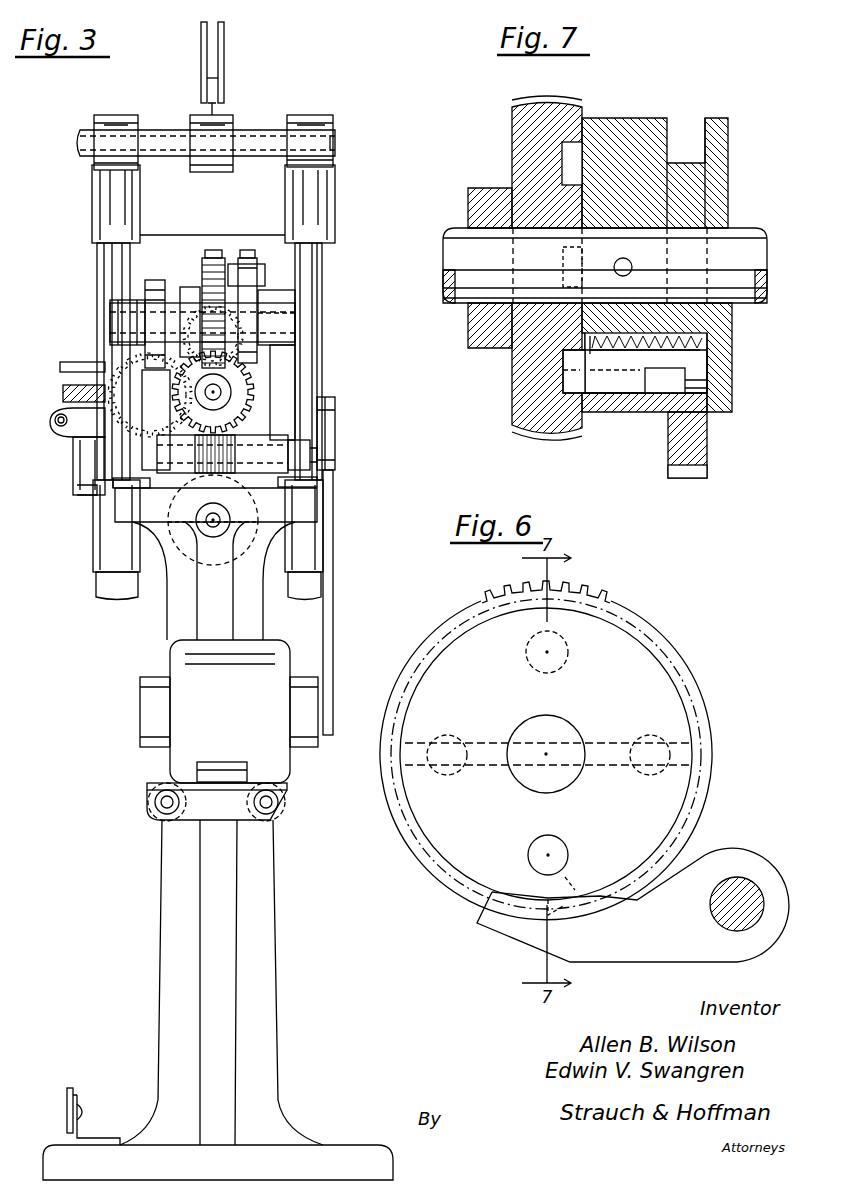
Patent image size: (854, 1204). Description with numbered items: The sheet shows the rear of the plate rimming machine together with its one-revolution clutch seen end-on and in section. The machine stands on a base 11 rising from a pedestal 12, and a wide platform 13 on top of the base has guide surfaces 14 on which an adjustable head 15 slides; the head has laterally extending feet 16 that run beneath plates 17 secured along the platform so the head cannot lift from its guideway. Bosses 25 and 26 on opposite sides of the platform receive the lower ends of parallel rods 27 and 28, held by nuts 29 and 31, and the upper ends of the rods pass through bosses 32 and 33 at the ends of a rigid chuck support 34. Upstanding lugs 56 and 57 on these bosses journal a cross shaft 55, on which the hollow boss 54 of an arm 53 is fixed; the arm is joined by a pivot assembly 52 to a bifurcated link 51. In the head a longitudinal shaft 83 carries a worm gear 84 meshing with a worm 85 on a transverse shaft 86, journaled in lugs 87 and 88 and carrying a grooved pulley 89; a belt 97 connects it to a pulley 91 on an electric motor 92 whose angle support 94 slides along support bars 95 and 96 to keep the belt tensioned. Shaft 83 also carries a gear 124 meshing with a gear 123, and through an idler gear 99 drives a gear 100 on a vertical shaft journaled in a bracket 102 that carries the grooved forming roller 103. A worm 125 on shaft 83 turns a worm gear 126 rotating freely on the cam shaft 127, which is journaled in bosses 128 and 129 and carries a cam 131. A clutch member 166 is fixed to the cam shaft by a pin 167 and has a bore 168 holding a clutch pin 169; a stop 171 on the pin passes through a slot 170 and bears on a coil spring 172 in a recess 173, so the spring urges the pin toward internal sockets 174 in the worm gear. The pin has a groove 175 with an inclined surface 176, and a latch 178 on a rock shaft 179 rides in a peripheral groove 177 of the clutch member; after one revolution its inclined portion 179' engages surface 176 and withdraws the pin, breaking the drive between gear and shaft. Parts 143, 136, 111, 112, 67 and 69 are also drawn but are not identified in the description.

In FIG. 3, the bifurcated link 51 is at (225, 55).
In FIG. 3, the pivot assembly 52 is at (226, 90).
In FIG. 3, the arm 53 is at (216, 110).
In FIG. 3, the hollow boss 54 is at (233, 124).
In FIG. 3, the cross shaft 55 is at (272, 133).
In FIG. 3, the upstanding lug 56 is at (120, 120).
In FIG. 3, the upstanding lug 57 is at (315, 120).
In FIG. 3, the boss 32 is at (95, 211).
In FIG. 3, the boss 33 is at (330, 192).
In FIG. 3, the chuck support 34 is at (162, 228).
In FIG. 3, the rod 27 is at (100, 273).
In FIG. 3, the rod 28 is at (322, 265).
In FIG. 3, the cam shaft 127 is at (296, 325).
In FIG. 7, the cam shaft 127 is at (745, 228).
In FIG. 6, the cam shaft 127 is at (540, 791).
In FIG. 3, the boss 128 is at (110, 306).
In FIG. 3, the boss 129 is at (293, 300).
In FIG. 3, the collar 143 is at (155, 282).
In FIG. 3, the worm gear 126 is at (202, 278).
In FIG. 7, the worm gear 126 is at (550, 70).
In FIG. 6, the worm gear 126 is at (580, 592).
In FIG. 3, the collar 136 is at (248, 258).
In FIG. 3, the cam 131 is at (254, 296).
In FIG. 3, the gear 123 is at (276, 317).
In FIG. 3, the shaft 83 is at (215, 392).
In FIG. 3, the worm gear 84 is at (240, 410).
In FIG. 3, the gear 124 is at (170, 413).
In FIG. 3, the worm 125 is at (190, 428).
In FIG. 3, the idler gear 99 is at (122, 420).
In FIG. 3, the adjustable head 15 is at (272, 390).
In FIG. 3, the lug 88 is at (280, 440).
In FIG. 3, the worm 85 is at (235, 436).
In FIG. 3, the transverse shaft 86 is at (302, 440).
In FIG. 3, the grooved pulley 89 is at (335, 410).
In FIG. 3, the belt 97 is at (333, 620).
In FIG. 3, the grooved forming roller 103 is at (80, 362).
In FIG. 3, the gear 100 is at (63, 396).
In FIG. 3, the arm 111 is at (50, 422).
In FIG. 3, the pivot 112 is at (67, 421).
In FIG. 3, the bracket 102 is at (75, 449).
In FIG. 3, the plate 17 is at (119, 462).
In FIG. 3, the lug 87 is at (160, 476).
In FIG. 3, the feet 16 is at (292, 484).
In FIG. 3, the platform 13 is at (305, 495).
In FIG. 3, the guide surfaces 14 is at (262, 515).
In FIG. 3, the boss 25 is at (95, 557).
In FIG. 3, the nut 29 is at (100, 592).
In FIG. 3, the boss 26 is at (285, 568).
In FIG. 3, the nut 31 is at (318, 578).
In FIG. 3, the base 11 is at (258, 903).
In FIG. 3, the electric motor 92 is at (278, 650).
In FIG. 3, the grooved pulley 91 is at (333, 688).
In FIG. 3, the angle support 94 is at (216, 810).
In FIG. 3, the support bar 95 is at (155, 810).
In FIG. 3, the support bar 96 is at (278, 803).
In FIG. 3, the pedestal 12 is at (337, 1145).
In FIG. 3, the plate 67 is at (74, 1092).
In FIG. 3, the bracket 69 is at (82, 1108).
In FIG. 7, the clutch member 166 is at (638, 118).
In FIG. 7, the peripheral groove 177 is at (682, 160).
In FIG. 7, the internal sockets 174 is at (576, 150).
In FIG. 6, the internal sockets 174 is at (568, 640).
In FIG. 7, the pin 167 is at (623, 258).
In FIG. 6, the pin 167 is at (613, 763).
In FIG. 7, the stop 171 is at (598, 318).
In FIG. 7, the recess 173 is at (632, 318).
In FIG. 7, the coil spring 172 is at (700, 330).
In FIG. 7, the bore 168 is at (704, 346).
In FIG. 7, the slot 170 is at (607, 366).
In FIG. 7, the inclined surface 176 is at (710, 375).
In FIG. 7, the inclined portion 179' is at (728, 390).
In FIG. 6, the inclined portion 179' is at (572, 875).
In FIG. 7, the groove 175 is at (638, 412).
In FIG. 7, the clutch pin 169 is at (612, 412).
In FIG. 7, the latch 178 is at (708, 432).
In FIG. 6, the latch 178 is at (715, 858).
In FIG. 6, the rock shaft 179 is at (747, 870).